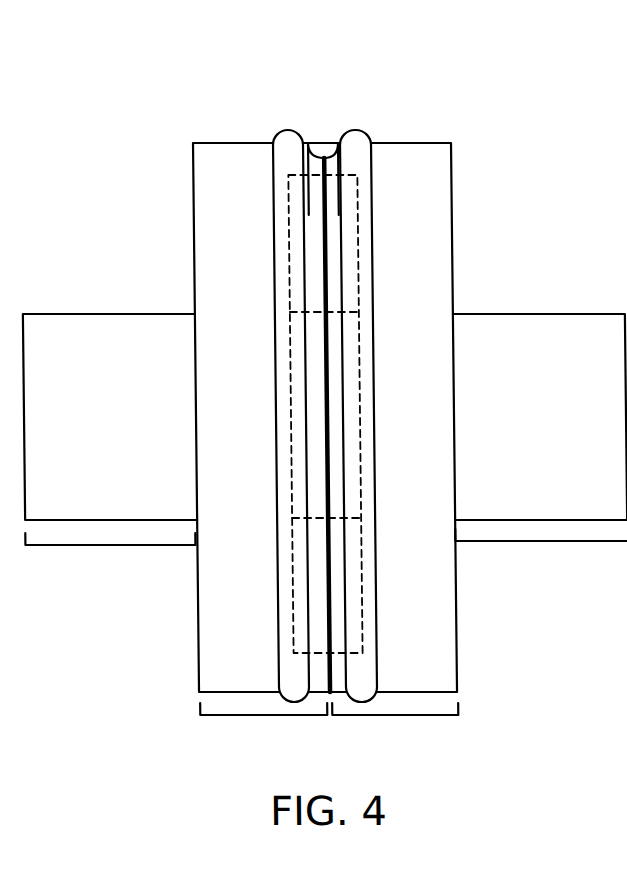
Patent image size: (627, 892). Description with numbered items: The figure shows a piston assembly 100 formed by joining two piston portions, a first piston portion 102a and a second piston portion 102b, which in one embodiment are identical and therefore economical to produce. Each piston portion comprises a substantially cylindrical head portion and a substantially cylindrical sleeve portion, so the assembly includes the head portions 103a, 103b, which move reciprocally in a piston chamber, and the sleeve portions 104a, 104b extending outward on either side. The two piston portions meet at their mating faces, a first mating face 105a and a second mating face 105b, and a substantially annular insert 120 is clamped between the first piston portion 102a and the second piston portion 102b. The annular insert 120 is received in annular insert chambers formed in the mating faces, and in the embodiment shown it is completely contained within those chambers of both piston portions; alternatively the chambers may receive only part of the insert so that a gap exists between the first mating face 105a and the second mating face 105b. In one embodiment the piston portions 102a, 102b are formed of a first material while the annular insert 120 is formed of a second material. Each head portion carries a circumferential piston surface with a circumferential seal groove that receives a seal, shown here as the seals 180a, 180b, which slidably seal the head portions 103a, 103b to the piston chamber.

The piston assembly 100 is at (109, 703).
The first piston portion 102a is at (193, 190).
The second piston portion 102b is at (451, 173).
The head portion 103a is at (261, 717).
The head portion 103b is at (389, 717).
The sleeve portion 104a is at (108, 545).
The sleeve portion 104b is at (543, 541).
The first mating face 105a is at (316, 143).
The second mating face 105b is at (328, 143).
The annular insert 120 is at (358, 243).
The seal 180a is at (287, 130).
The seal 180b is at (362, 130).